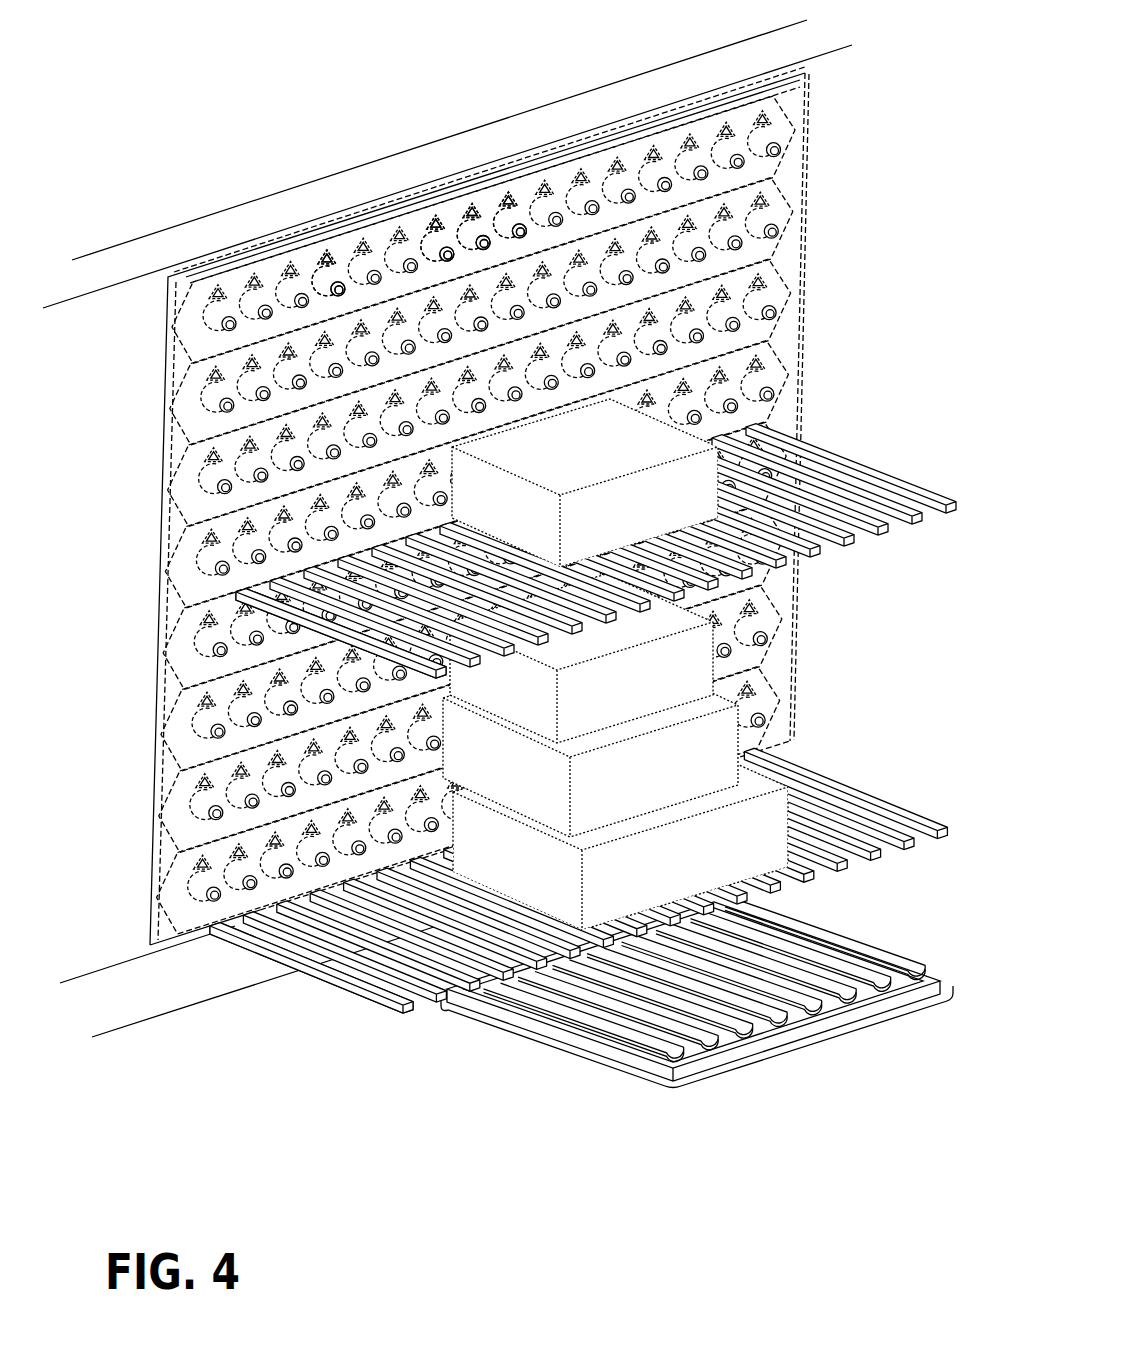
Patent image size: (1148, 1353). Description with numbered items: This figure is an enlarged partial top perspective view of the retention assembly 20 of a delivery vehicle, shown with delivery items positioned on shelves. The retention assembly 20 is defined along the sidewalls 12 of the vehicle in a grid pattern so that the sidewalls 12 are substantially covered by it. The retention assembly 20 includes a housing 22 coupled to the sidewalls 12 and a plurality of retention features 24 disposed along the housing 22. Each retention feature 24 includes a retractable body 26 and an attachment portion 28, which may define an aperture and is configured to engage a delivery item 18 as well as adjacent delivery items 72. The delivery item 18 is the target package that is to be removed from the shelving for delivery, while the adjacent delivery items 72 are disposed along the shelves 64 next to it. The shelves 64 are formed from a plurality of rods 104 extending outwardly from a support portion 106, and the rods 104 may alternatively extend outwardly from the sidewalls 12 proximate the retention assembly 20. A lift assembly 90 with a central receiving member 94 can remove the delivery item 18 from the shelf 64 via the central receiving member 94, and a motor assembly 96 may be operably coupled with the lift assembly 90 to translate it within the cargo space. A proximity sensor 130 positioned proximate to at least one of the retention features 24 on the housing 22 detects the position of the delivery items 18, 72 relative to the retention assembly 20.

The sidewalls 12 is at (788, 243).
The delivery item 18 is at (490, 492).
The retention assembly 20 is at (214, 260).
The housing 22 is at (192, 408).
The retention feature 24 is at (423, 255).
The retractable body 26 is at (477, 243).
The attachment portion 28 is at (521, 243).
The shelves 64 is at (240, 614).
The adjacent delivery items 72 is at (690, 660).
The lift assembly 90 is at (640, 1080).
The central receiving member 94 is at (868, 967).
The motor assembly 96 is at (840, 1022).
The rods 104 is at (390, 685).
The support portion 106 is at (200, 928).
The proximity sensor 130 is at (332, 262).